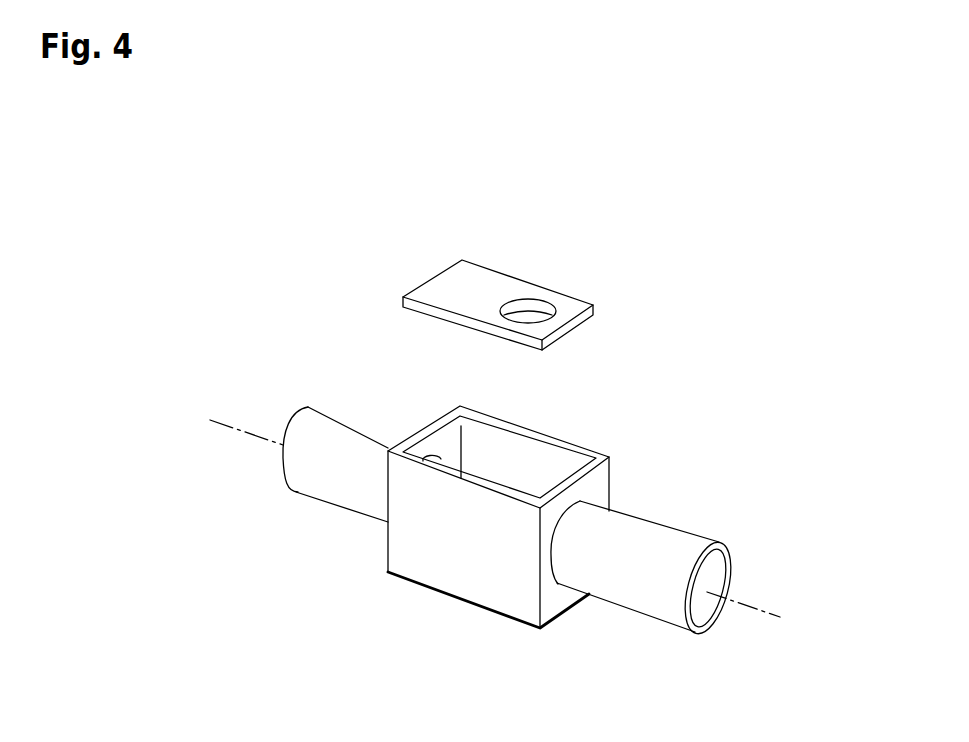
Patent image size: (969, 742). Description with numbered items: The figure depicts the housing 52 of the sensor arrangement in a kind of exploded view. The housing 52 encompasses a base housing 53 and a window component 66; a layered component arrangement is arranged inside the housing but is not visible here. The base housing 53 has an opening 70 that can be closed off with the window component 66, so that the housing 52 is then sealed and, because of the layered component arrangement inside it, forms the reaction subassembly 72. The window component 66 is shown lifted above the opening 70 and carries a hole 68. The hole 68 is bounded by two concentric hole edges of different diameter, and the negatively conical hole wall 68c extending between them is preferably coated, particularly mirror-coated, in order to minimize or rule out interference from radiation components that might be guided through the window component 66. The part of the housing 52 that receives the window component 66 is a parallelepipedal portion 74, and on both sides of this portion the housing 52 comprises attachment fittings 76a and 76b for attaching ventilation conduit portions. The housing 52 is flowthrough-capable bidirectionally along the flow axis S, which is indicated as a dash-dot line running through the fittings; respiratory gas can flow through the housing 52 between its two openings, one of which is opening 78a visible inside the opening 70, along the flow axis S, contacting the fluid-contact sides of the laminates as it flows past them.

The housing 52 is at (534, 462).
The reaction subassembly 72 is at (704, 334).
The base housing 53 is at (485, 640).
The window component 66 is at (448, 283).
The hole 68 is at (540, 311).
The negatively conical hole wall 68c is at (520, 302).
The opening 70 is at (555, 460).
The parallelepipedal portion 74 is at (455, 560).
The attachment fitting 76a is at (318, 438).
The attachment fitting 76b is at (658, 552).
The opening 78a is at (443, 464).
The flow axis S is at (767, 608).